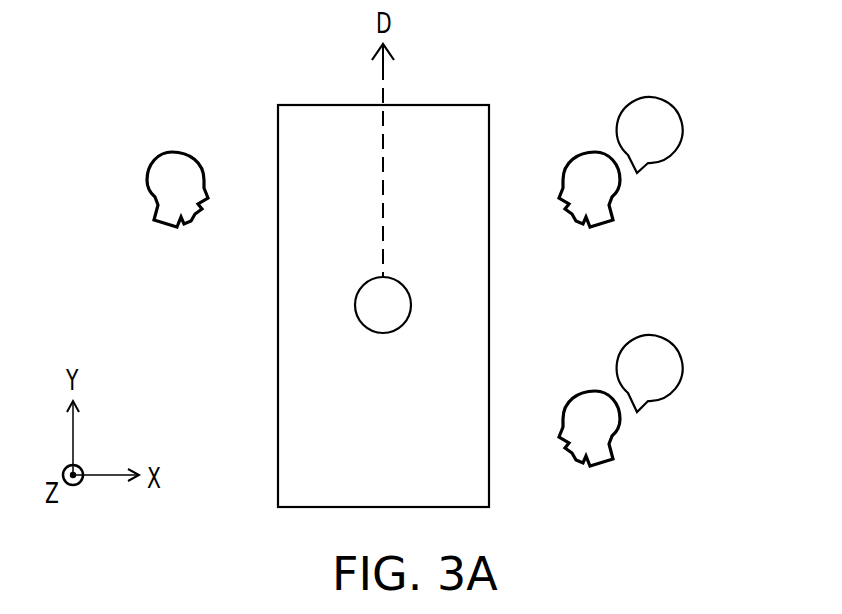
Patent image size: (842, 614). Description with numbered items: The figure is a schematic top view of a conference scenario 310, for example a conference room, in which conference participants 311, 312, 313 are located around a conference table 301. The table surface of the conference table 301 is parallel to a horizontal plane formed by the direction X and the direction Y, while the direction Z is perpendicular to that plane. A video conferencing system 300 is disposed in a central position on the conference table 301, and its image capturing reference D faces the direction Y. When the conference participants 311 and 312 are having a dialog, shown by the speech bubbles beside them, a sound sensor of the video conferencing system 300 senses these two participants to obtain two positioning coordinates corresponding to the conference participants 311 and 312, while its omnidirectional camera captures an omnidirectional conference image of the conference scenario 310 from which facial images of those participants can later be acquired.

The video conferencing system 300 is at (392, 334).
The conference table 301 is at (453, 105).
The conference scenario 310 is at (745, 544).
The conference participant 311 is at (612, 207).
The conference participant 312 is at (613, 447).
The conference participant 313 is at (165, 152).